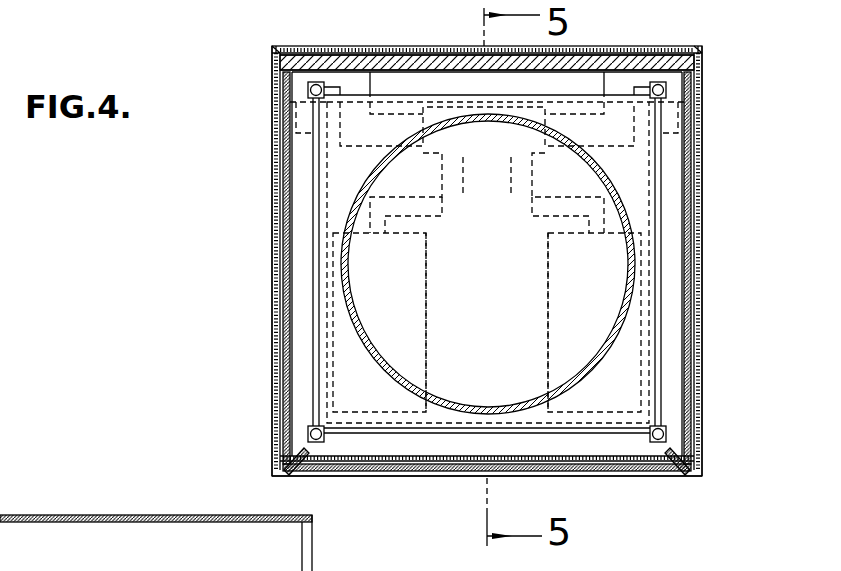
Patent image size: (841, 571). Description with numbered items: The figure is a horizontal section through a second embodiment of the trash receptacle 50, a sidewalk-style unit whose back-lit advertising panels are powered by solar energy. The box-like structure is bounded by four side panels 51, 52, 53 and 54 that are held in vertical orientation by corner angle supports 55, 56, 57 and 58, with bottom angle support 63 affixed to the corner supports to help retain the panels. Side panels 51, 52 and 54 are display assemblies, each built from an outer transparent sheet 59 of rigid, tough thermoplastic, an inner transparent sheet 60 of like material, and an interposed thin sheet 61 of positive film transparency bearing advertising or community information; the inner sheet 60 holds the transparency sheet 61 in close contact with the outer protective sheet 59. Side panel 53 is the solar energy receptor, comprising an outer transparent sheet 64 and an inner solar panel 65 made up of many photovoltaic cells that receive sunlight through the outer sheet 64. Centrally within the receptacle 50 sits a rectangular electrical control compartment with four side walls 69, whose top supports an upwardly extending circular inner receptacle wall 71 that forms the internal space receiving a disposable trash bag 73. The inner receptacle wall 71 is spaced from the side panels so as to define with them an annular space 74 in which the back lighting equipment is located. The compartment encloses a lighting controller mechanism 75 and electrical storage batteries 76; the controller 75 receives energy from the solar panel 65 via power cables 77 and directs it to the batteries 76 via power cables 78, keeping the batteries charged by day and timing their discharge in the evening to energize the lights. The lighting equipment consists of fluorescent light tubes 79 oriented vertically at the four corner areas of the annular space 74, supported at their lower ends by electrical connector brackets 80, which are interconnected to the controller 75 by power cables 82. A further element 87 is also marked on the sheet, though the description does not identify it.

The trash receptacle 50 is at (266, 44).
The side panel 51 is at (641, 481).
The side panel 52 is at (708, 297).
The side panel 53 is at (329, 43).
The side panel 54 is at (268, 307).
The corner angle support 55 is at (705, 478).
The corner angle support 56 is at (703, 57).
The corner angle support 57 is at (275, 57).
The corner angle support 58 is at (284, 463).
The outer transparent sheet 59 is at (278, 160).
The inner transparent sheet 60 is at (285, 186).
The sheet of positive film transparency material 61 is at (292, 214).
The bottom angle support 63 is at (372, 50).
The outer transparent sheet 64 is at (402, 58).
The solar panel 65 is at (440, 62).
The side wall 69 is at (620, 95).
The inner receptacle wall 71 is at (355, 278).
The disposable trash bag 73 is at (630, 278).
The annular space 74 is at (466, 82).
The lighting controller mechanism 75 is at (474, 168).
The electrical storage batteries 76 is at (427, 320).
The power cables 77 is at (372, 82).
The power cables 78 is at (434, 200).
The fluorescent light tubes 79 is at (312, 96).
The electrical connector brackets 80 is at (308, 90).
The power cables 82 is at (327, 137).
The member 87 is at (58, 522).